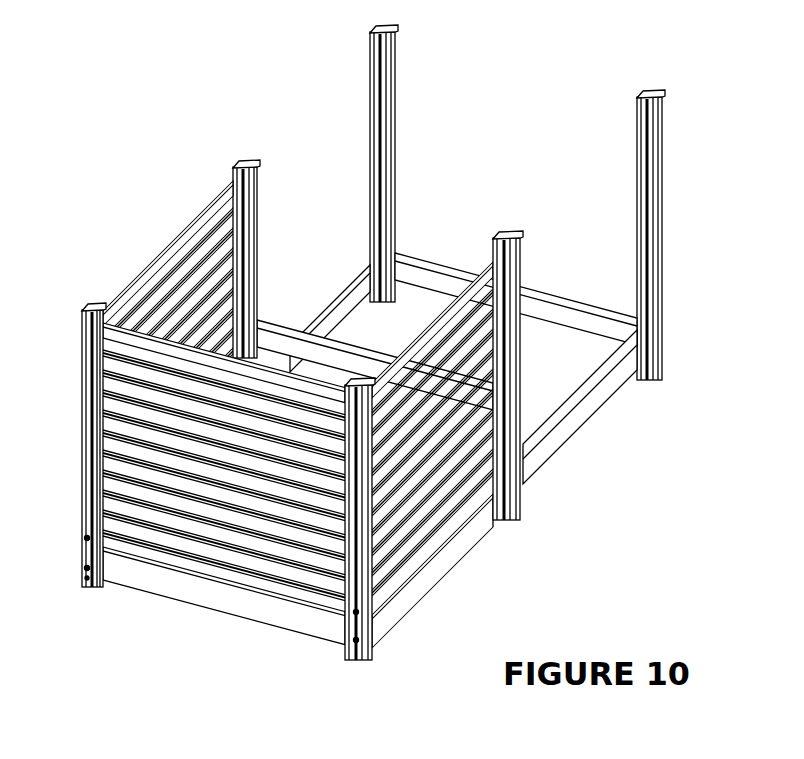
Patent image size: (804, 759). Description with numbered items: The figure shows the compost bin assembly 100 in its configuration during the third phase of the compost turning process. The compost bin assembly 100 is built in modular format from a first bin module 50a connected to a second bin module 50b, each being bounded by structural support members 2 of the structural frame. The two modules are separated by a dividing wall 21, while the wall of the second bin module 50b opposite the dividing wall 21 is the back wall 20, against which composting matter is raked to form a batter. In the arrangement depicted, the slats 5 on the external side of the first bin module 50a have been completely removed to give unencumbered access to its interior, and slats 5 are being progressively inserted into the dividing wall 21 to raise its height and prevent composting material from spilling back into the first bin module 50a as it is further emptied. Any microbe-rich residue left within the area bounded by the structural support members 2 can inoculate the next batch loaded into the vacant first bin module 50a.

The compost bin assembly 100 is at (564, 81).
The structural support members 2 is at (342, 307).
The slats 5 is at (418, 453).
The back wall 20 is at (166, 338).
The dividing wall 21 is at (283, 318).
The first bin module 50a is at (477, 260).
The second bin module 50b is at (128, 247).